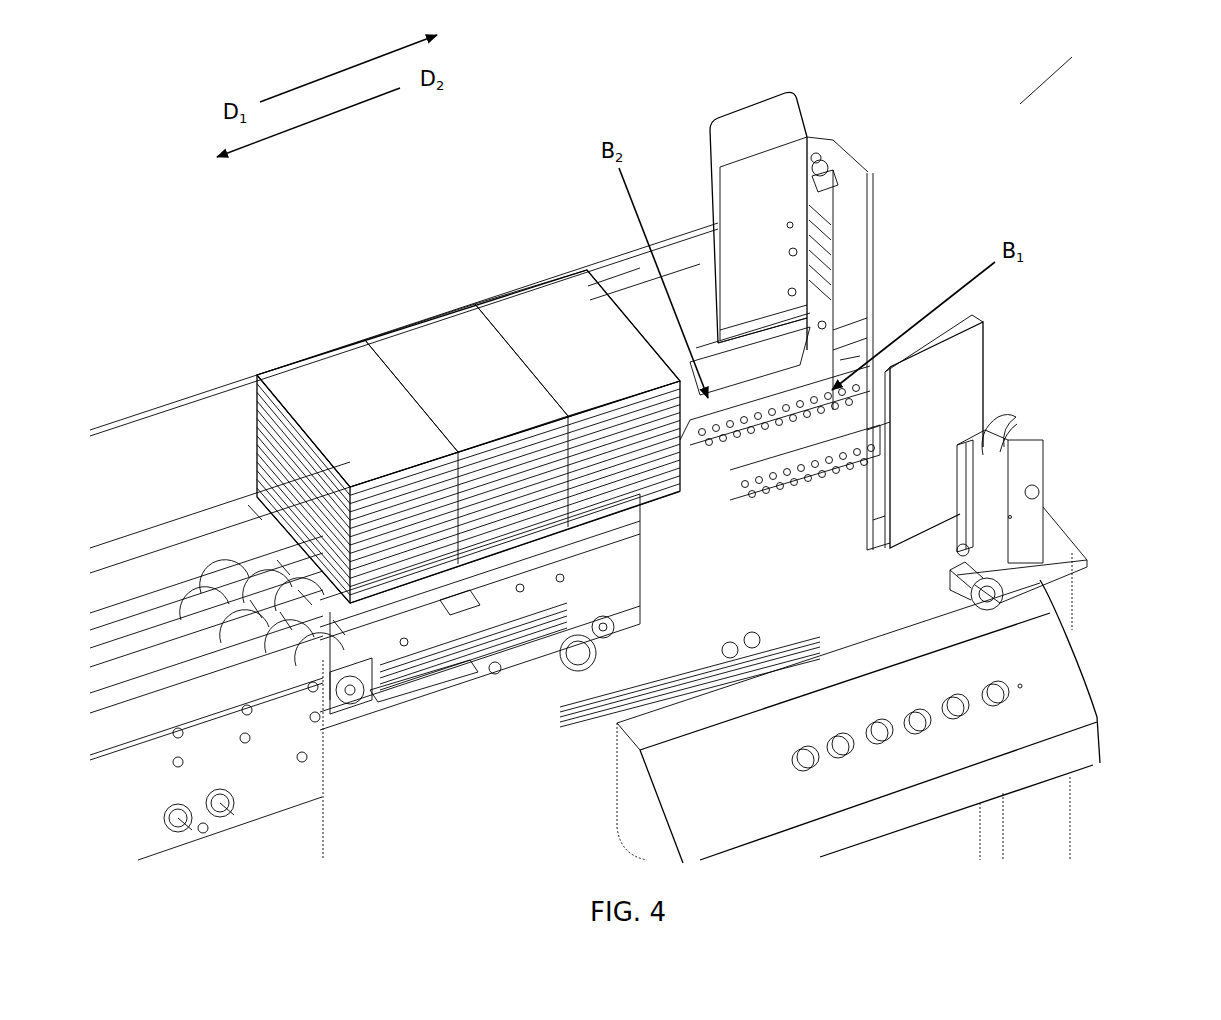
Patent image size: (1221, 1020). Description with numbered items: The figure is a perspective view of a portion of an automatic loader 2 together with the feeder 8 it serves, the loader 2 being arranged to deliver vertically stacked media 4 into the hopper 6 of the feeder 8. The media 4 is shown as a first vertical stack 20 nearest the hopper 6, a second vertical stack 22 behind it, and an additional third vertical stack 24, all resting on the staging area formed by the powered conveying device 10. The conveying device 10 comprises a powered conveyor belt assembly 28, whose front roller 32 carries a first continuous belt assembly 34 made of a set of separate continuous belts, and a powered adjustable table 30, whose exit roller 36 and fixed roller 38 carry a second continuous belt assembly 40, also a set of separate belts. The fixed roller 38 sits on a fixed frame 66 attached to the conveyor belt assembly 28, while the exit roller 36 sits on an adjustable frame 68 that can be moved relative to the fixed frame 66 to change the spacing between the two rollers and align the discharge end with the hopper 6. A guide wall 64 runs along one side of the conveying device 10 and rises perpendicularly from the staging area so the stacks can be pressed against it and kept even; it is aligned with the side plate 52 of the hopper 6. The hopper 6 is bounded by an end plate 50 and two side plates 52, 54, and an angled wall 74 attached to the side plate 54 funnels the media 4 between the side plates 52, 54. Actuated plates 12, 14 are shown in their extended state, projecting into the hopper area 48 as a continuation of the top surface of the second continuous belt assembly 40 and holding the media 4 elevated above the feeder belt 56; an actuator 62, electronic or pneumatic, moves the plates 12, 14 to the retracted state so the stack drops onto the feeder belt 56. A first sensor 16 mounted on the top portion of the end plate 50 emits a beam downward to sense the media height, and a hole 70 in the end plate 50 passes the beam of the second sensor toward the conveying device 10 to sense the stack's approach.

The automatic loader 2 is at (1010, 115).
The vertically stacked media 4 is at (503, 197).
The hopper 6 is at (723, 88).
The feeder 8 is at (1037, 717).
The powered conveying device 10 is at (150, 231).
The actuated plate 12 is at (757, 340).
The actuated plate 14 is at (885, 545).
The first sensor 16 is at (833, 170).
The first vertical stack 20 is at (555, 318).
The second vertical stack 22 is at (457, 358).
The third vertical stack 24 is at (355, 408).
The powered conveyor belt assembly 28 is at (263, 790).
The powered adjustable table 30 is at (383, 645).
The front roller 32 is at (187, 555).
The first continuous belt assembly 34 is at (185, 675).
The exit roller 36 is at (697, 522).
The fixed roller 38 is at (240, 550).
The second continuous belt assembly 40 is at (333, 620).
The hopper area 48 is at (758, 265).
The end plate 50 is at (865, 170).
The side plate 52 is at (775, 188).
The side plate 54 is at (943, 393).
The feeder belt 56 is at (807, 470).
The actuator 62 is at (972, 570).
The guide wall 64 is at (620, 277).
The fixed frame 66 is at (357, 718).
The adjustable frame 68 is at (672, 568).
The hole 70 is at (847, 343).
The angled wall 74 is at (880, 463).